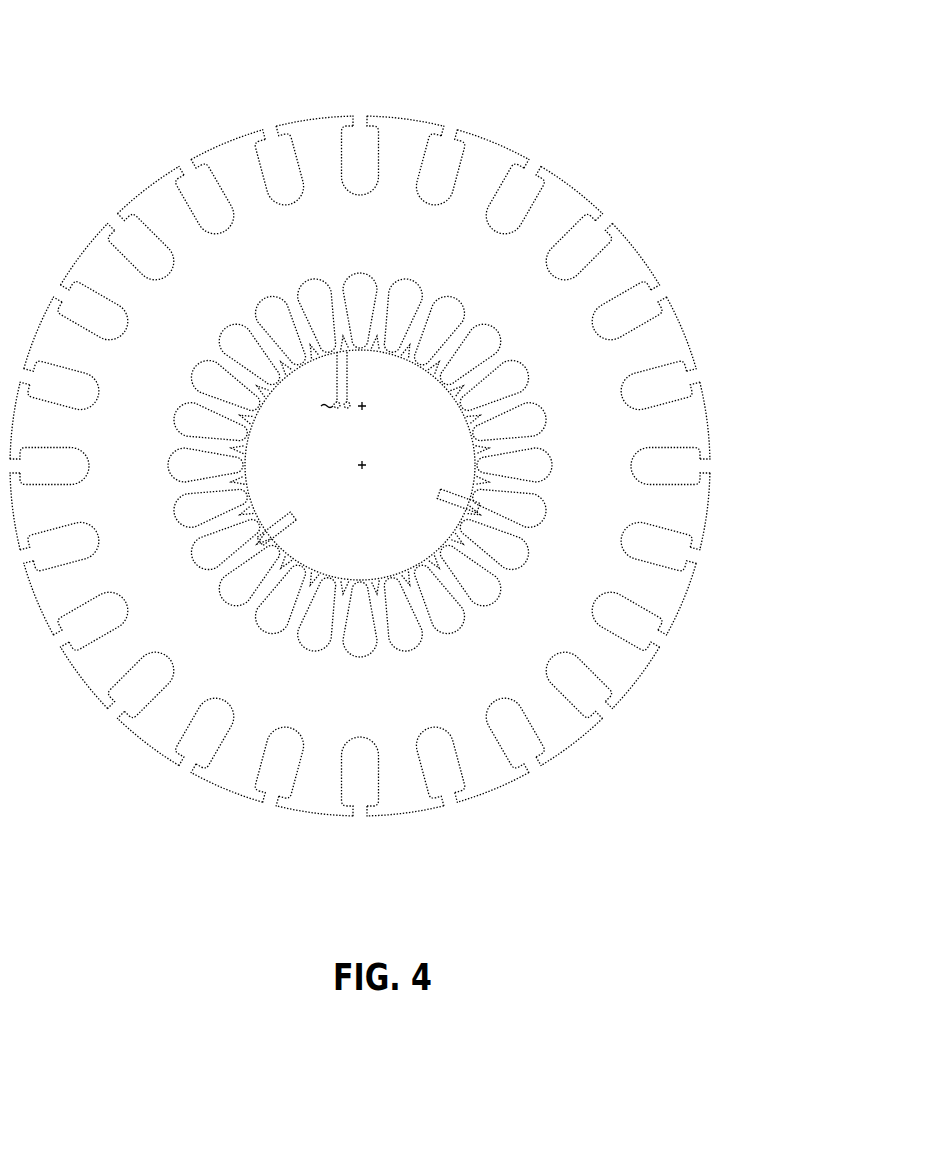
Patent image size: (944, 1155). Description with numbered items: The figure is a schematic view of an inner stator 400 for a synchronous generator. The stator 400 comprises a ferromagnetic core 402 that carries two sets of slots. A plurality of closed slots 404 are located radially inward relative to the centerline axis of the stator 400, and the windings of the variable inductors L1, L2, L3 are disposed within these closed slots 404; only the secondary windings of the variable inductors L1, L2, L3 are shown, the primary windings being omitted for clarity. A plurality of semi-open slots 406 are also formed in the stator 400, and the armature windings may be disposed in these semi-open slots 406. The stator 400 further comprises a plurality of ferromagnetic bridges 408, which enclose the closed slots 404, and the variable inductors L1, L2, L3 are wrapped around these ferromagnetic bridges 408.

The inner stator 400 is at (672, 95).
The ferromagnetic core 402 is at (492, 277).
The plurality of closed slots 404 is at (481, 346).
The plurality of semi-open slots 406 is at (625, 310).
The plurality of ferromagnetic bridges 408 is at (465, 432).
The variable inductor L1 is at (443, 419).
The variable inductor L2 is at (346, 574).
The variable inductor L3 is at (258, 426).